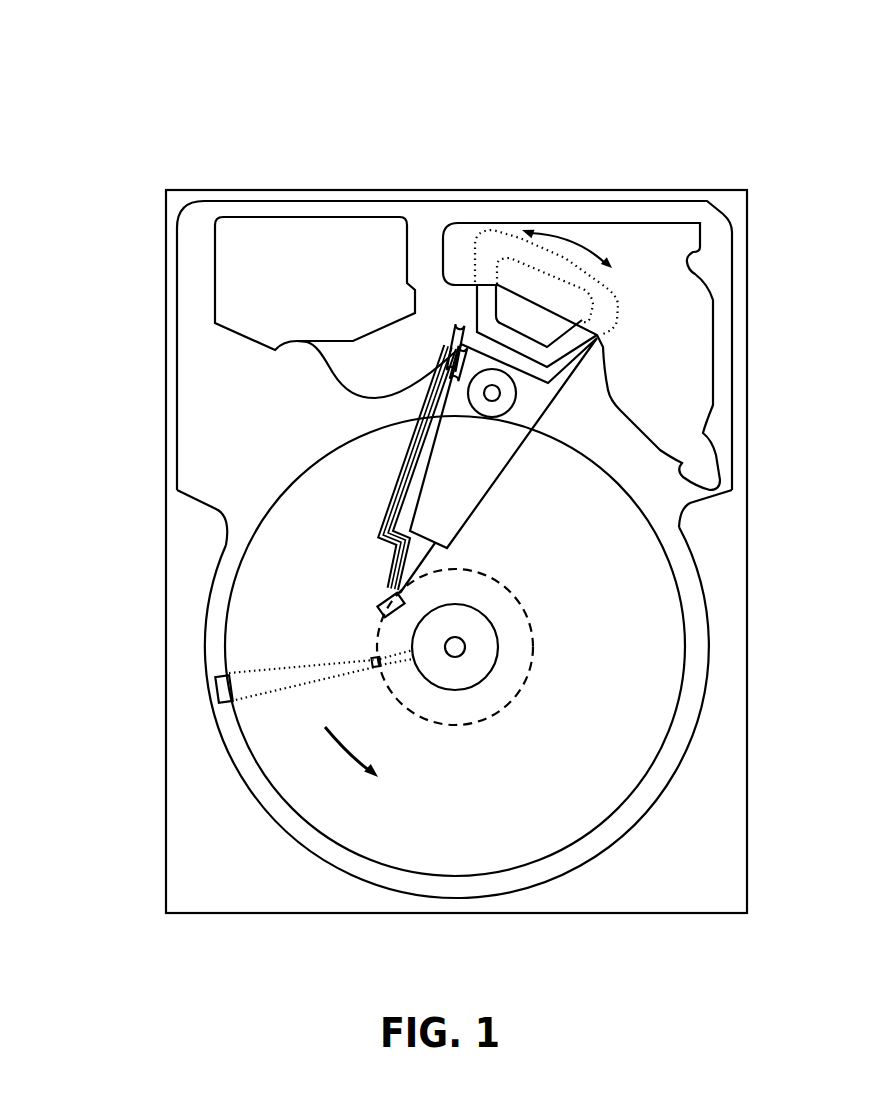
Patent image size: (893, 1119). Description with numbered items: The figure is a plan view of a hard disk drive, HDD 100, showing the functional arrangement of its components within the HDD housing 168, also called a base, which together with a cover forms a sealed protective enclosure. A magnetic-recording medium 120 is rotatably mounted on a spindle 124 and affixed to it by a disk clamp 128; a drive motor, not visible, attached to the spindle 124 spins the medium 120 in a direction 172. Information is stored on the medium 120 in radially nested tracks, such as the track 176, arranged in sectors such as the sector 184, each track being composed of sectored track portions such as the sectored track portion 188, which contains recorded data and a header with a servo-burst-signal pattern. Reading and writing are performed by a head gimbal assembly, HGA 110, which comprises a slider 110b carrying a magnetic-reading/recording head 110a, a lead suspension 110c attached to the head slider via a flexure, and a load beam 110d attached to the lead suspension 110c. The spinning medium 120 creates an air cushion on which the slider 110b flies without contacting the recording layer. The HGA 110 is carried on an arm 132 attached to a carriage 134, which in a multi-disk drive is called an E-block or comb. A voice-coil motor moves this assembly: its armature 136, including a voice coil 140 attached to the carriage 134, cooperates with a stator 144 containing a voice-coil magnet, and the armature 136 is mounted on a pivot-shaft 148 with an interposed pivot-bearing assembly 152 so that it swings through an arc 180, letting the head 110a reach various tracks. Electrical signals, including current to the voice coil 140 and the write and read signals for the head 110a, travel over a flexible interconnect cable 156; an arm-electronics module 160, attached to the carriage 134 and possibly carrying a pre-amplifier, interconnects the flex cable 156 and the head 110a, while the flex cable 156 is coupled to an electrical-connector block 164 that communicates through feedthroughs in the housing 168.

The hard disk drive 100 is at (103, 82).
The head gimbal assembly 110 is at (249, 474).
The magnetic-reading/recording head 110a is at (378, 603).
The slider 110b is at (385, 595).
The lead suspension 110c is at (397, 560).
The load beam 110d is at (403, 537).
The magnetic-recording medium 120 is at (617, 603).
The spindle 124 is at (466, 645).
The disk clamp 128 is at (478, 660).
The arm 132 is at (450, 498).
The carriage 134 is at (510, 425).
The armature 136 is at (475, 307).
The voice coil 140 is at (490, 297).
The stator 144 is at (683, 303).
The pivot-shaft 148 is at (501, 391).
The pivot-bearing assembly 152 is at (503, 402).
The flexible interconnect cable 156 is at (330, 373).
The arm-electronics module 160 is at (447, 363).
The electrical-connector block 164 is at (238, 280).
The HDD housing 168 is at (730, 200).
The direction 172 is at (355, 758).
The track 176 is at (523, 612).
The arc 180 is at (567, 241).
The sector 184 is at (216, 688).
The sectored track portion 188 is at (381, 618).